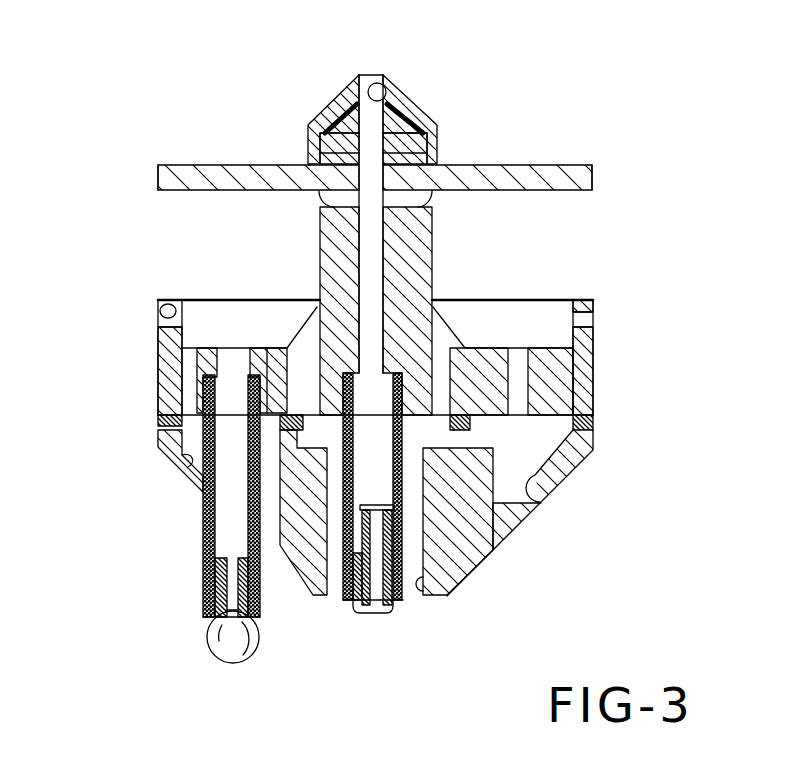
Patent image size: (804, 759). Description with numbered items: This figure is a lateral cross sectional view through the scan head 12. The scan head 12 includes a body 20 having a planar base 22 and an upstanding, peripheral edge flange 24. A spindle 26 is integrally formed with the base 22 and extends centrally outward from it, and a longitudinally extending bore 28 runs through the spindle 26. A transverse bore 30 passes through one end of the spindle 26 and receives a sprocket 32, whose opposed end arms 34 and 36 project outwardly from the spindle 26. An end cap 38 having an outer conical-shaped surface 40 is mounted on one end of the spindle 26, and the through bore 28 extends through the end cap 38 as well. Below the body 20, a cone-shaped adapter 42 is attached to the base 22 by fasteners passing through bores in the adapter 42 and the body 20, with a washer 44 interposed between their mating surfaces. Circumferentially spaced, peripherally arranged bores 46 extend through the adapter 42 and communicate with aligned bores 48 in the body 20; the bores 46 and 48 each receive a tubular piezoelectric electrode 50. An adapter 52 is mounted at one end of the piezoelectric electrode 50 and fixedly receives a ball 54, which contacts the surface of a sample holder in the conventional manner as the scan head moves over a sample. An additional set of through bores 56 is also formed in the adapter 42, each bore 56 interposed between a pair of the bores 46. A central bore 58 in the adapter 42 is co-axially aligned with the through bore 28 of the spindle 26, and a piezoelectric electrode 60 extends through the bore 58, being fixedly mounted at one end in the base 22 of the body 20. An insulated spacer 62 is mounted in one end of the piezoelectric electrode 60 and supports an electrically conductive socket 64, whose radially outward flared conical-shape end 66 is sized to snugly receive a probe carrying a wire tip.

The scan head 12 is at (598, 222).
The body 20 is at (517, 328).
The planar base 22 is at (500, 382).
The peripheral edge flange 24 is at (598, 303).
The spindle 26 is at (433, 232).
The longitudinally extending bore 28 is at (383, 75).
The transverse bore 30 is at (412, 195).
The sprocket 32 is at (549, 163).
The end arm 34 is at (598, 176).
The end arm 36 is at (164, 178).
The end cap 38 is at (308, 126).
The outer conical-shaped surface 40 is at (330, 103).
The cone-shaped adapter 42 is at (475, 555).
The washer 44 is at (594, 422).
The peripherally arranged bore 46 is at (187, 474).
The aligned bore 48 is at (226, 350).
The tubular piezoelectric electrode 50 is at (206, 537).
The adapter 52 is at (206, 598).
The ball 54 is at (213, 648).
The through bore 56 is at (549, 509).
The central bore 58 is at (413, 598).
The piezoelectric electrode 60 is at (343, 568).
The insulated spacer 62 is at (405, 601).
The electrically conductive socket 64 is at (363, 507).
The flared conical-shape end 66 is at (373, 613).